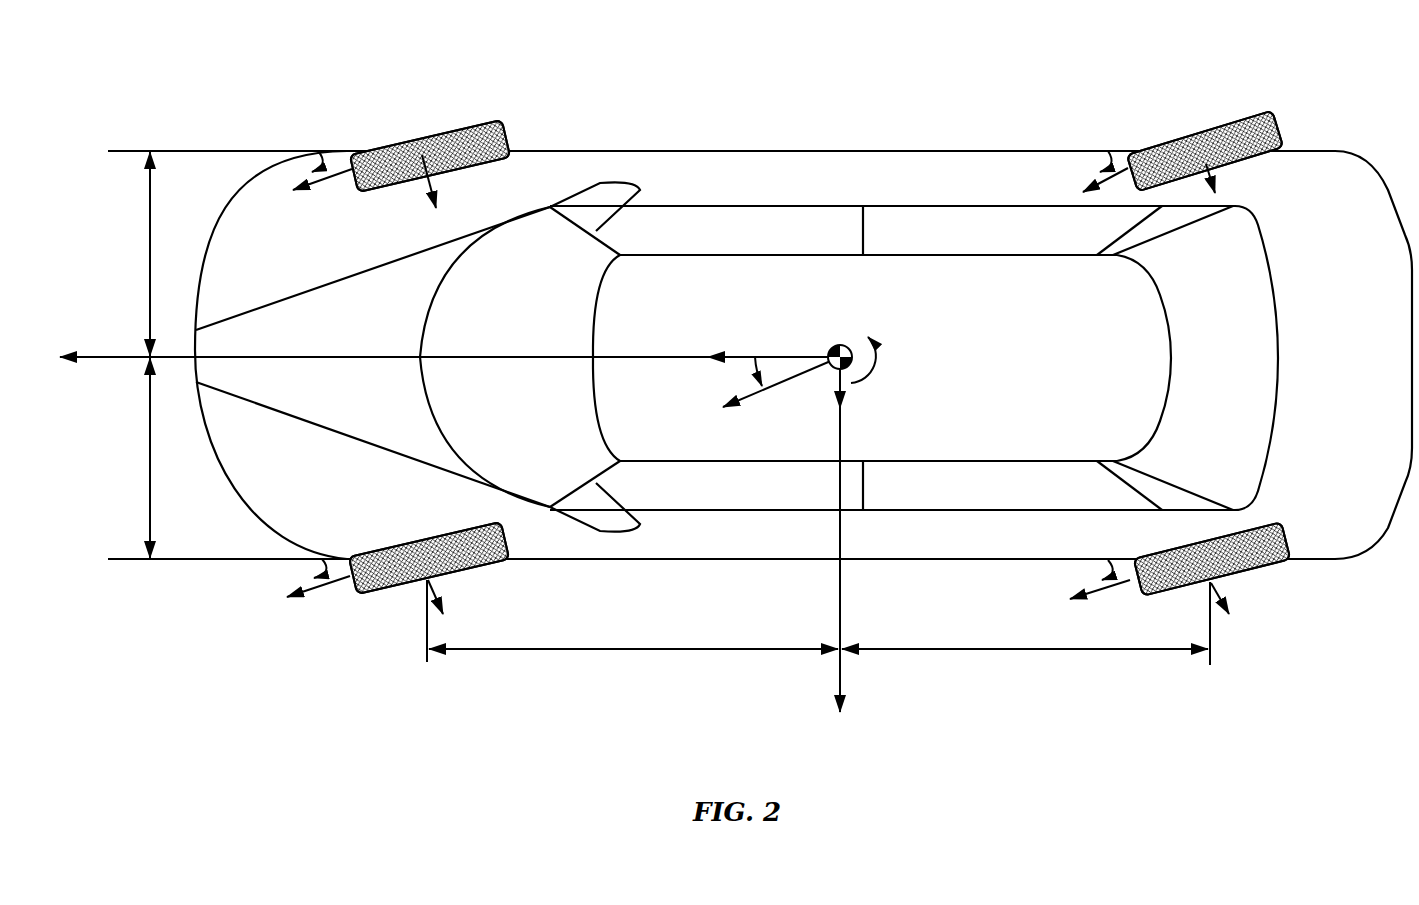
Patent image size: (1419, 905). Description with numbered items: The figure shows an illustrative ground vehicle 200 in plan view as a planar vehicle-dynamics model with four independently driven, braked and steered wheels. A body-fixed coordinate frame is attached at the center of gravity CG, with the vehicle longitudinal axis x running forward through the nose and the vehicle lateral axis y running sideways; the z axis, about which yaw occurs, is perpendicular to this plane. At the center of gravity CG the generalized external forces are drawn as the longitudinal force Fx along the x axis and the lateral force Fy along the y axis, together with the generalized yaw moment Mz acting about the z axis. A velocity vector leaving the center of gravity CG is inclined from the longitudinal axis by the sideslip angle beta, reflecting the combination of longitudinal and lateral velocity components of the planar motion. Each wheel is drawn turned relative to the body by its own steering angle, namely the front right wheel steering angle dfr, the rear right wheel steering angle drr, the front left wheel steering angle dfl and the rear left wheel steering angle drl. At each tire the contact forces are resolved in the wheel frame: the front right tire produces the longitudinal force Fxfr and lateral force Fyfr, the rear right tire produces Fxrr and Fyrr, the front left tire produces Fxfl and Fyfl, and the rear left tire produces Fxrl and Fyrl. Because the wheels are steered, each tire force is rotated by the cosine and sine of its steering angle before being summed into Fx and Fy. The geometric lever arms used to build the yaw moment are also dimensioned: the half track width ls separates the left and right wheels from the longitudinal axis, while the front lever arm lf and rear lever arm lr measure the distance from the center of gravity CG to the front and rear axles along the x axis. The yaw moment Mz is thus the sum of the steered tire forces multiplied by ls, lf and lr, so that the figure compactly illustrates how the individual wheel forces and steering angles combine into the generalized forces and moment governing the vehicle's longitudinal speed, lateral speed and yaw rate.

The vehicle dynamics model 200 is at (263, 46).
The center of gravity CG is at (826, 342).
The generalized longitudinal force Fx is at (764, 337).
The generalized lateral force Fy is at (862, 390).
The generalized yaw moment Mz is at (888, 359).
The vehicle sideslip angle beta is at (771, 382).
The vehicle longitudinal axis x is at (450, 337).
The vehicle lateral axis y is at (859, 534).
The lateral lever arm ls is at (132, 355).
The front lever arm lf is at (632, 621).
The rear lever arm lr is at (1026, 623).
The front right tire longitudinal force Fxfr is at (322, 200).
The front right tire lateral force Fyfr is at (452, 186).
The front right wheel steering angle dfr is at (290, 165).
The rear right tire longitudinal force Fxrr is at (1098, 204).
The rear right tire lateral force Fyrr is at (1248, 189).
The rear right wheel steering angle drr is at (1086, 168).
The front left tire longitudinal force Fxfl is at (309, 609).
The front left tire lateral force Fyfl is at (458, 603).
The front left wheel steering angle dfl is at (292, 576).
The rear left tire longitudinal force Fxrl is at (1100, 609).
The rear left tire lateral force Fyrl is at (1242, 607).
The rear left wheel steering angle drl is at (1080, 576).